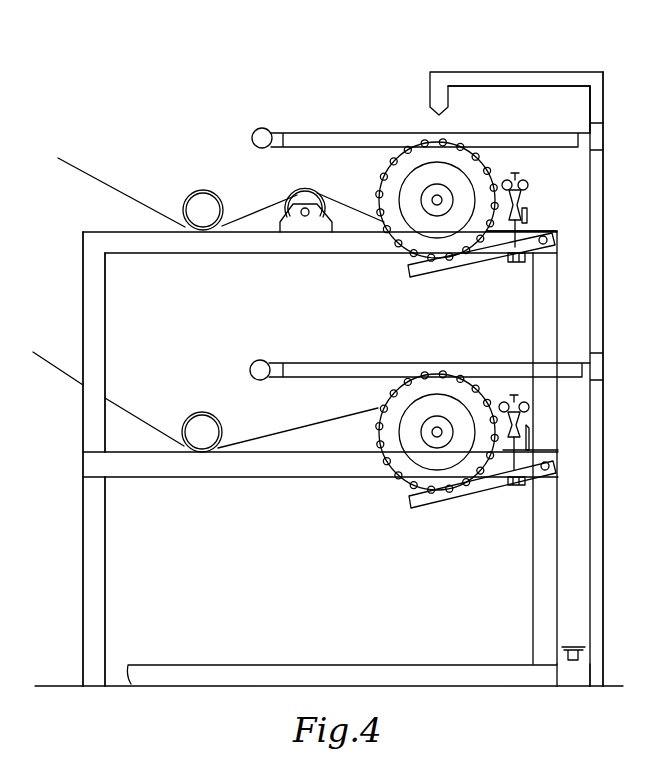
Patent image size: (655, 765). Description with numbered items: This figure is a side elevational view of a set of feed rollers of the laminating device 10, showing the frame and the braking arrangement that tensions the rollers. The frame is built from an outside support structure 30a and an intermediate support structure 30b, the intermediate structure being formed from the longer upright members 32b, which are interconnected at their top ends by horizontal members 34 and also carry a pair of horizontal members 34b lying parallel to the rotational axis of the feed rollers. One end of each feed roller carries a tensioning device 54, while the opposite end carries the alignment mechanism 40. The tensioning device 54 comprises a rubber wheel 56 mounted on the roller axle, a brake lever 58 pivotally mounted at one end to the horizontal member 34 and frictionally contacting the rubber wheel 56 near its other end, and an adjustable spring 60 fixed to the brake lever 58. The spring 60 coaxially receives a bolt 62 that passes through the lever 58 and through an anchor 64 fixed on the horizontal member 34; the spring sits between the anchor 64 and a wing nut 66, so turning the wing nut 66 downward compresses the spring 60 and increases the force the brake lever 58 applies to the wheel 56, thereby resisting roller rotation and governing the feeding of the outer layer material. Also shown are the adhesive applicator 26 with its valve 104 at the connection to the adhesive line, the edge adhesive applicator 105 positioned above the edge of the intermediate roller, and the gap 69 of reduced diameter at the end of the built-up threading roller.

The laminating device 10 is at (604, 317).
The adhesive applicator 26 is at (262, 127).
The outside support structure 30a is at (83, 513).
The intermediate support structure 30b is at (83, 410).
The upright member 32b is at (83, 296).
The horizontal member 34 is at (270, 478).
The horizontal member 34b is at (260, 255).
The alignment mechanism 40 is at (571, 379).
The tensioning device 54 is at (522, 148).
The rubber wheel 56 is at (440, 152).
The brake lever 58 is at (409, 273).
The adjustable spring 60 is at (523, 205).
The bolt 62 is at (519, 195).
The anchor 64 is at (528, 443).
The wing nut 66 is at (528, 183).
The gap 69 is at (528, 215).
The valve 104 is at (570, 645).
The edge adhesive applicator 105 is at (443, 72).